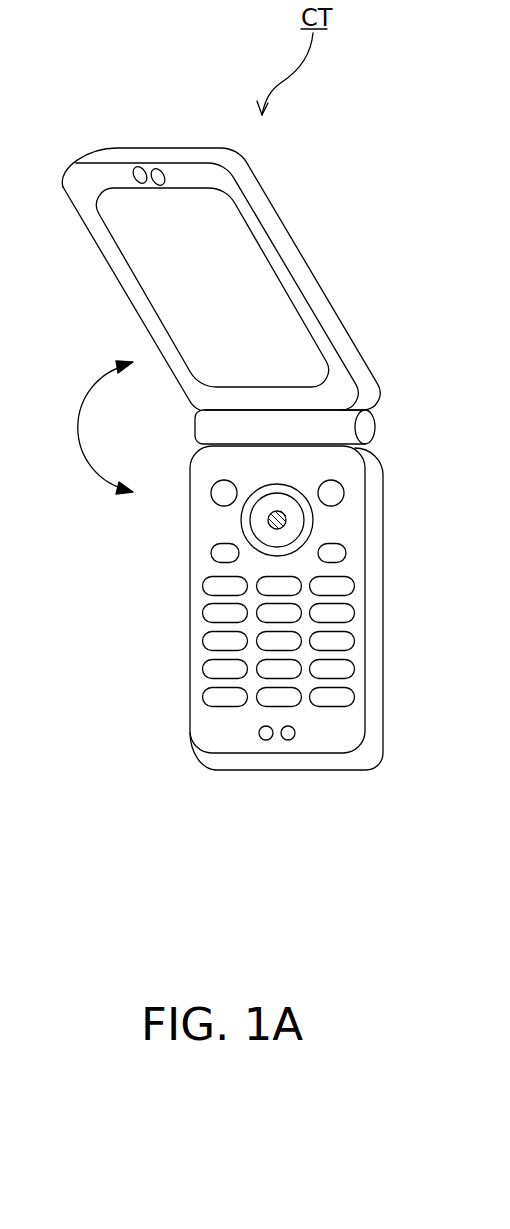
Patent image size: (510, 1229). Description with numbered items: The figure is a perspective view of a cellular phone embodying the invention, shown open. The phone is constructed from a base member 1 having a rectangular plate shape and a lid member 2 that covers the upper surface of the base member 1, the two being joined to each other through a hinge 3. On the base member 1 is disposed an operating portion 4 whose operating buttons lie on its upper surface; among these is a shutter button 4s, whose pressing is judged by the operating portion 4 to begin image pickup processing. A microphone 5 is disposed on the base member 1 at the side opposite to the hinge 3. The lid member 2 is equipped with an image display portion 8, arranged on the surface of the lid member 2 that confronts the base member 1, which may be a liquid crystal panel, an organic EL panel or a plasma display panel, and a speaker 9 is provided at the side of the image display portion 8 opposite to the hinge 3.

The base member 1 is at (190, 606).
The lid member 2 is at (122, 288).
The hinge 3 is at (193, 427).
The operating portion 4 is at (354, 585).
The shutter button 4s is at (287, 520).
The microphone 5 is at (288, 740).
The image display portion 8 is at (252, 290).
The speaker 9 is at (147, 172).